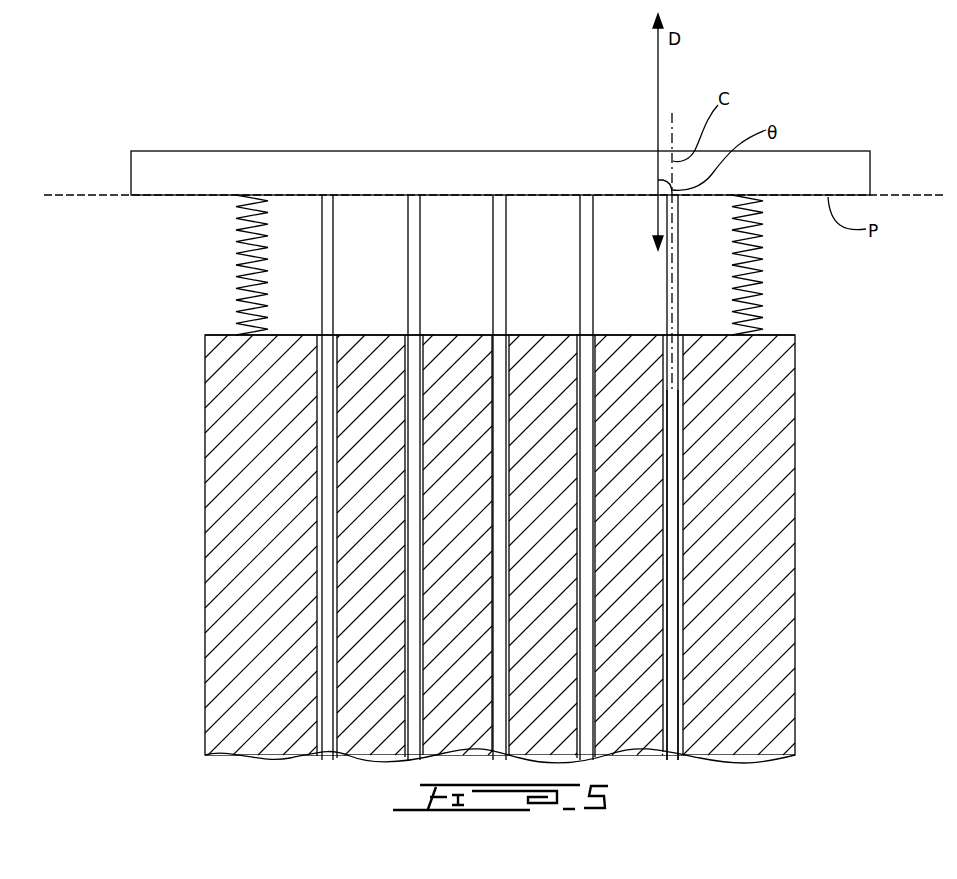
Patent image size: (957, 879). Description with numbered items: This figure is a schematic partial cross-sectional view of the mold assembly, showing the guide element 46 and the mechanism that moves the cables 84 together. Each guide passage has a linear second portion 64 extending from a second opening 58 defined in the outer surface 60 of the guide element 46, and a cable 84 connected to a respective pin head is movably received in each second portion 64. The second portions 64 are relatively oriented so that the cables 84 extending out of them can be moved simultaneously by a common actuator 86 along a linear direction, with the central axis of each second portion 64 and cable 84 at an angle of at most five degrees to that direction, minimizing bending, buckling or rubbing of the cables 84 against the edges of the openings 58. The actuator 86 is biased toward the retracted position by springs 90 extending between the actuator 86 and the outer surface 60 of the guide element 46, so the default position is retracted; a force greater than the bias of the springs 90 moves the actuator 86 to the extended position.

The actuator 86 is at (122, 167).
The springs 90 is at (240, 260).
The second opening 58 is at (508, 335).
The outer surface 60 is at (778, 335).
The guide element 46 is at (562, 515).
The cable 84 is at (670, 463).
The second portion 64 is at (670, 492).